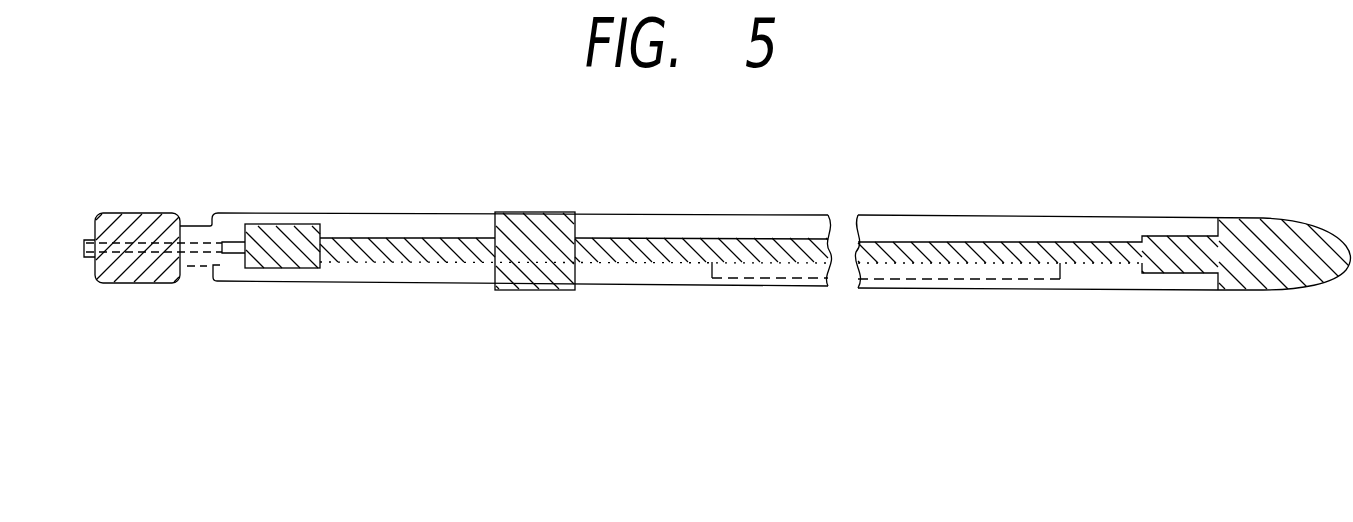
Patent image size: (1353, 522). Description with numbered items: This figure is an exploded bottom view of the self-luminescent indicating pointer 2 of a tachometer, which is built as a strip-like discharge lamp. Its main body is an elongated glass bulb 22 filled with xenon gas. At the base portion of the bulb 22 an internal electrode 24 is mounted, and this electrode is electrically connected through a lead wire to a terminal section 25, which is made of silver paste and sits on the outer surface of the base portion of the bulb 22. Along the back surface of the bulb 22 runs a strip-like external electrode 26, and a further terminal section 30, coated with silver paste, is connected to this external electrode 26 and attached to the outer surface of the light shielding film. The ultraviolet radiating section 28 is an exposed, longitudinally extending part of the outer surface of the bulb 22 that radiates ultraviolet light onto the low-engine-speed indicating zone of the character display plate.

The self-luminescent indicating pointer 2 is at (697, 214).
The glass bulb 22 is at (922, 215).
The internal electrode 24 is at (232, 254).
The terminal section 25 is at (128, 220).
The external electrode 26 is at (428, 262).
The ultraviolet radiating section 28 is at (918, 276).
The terminal section 30 is at (533, 236).